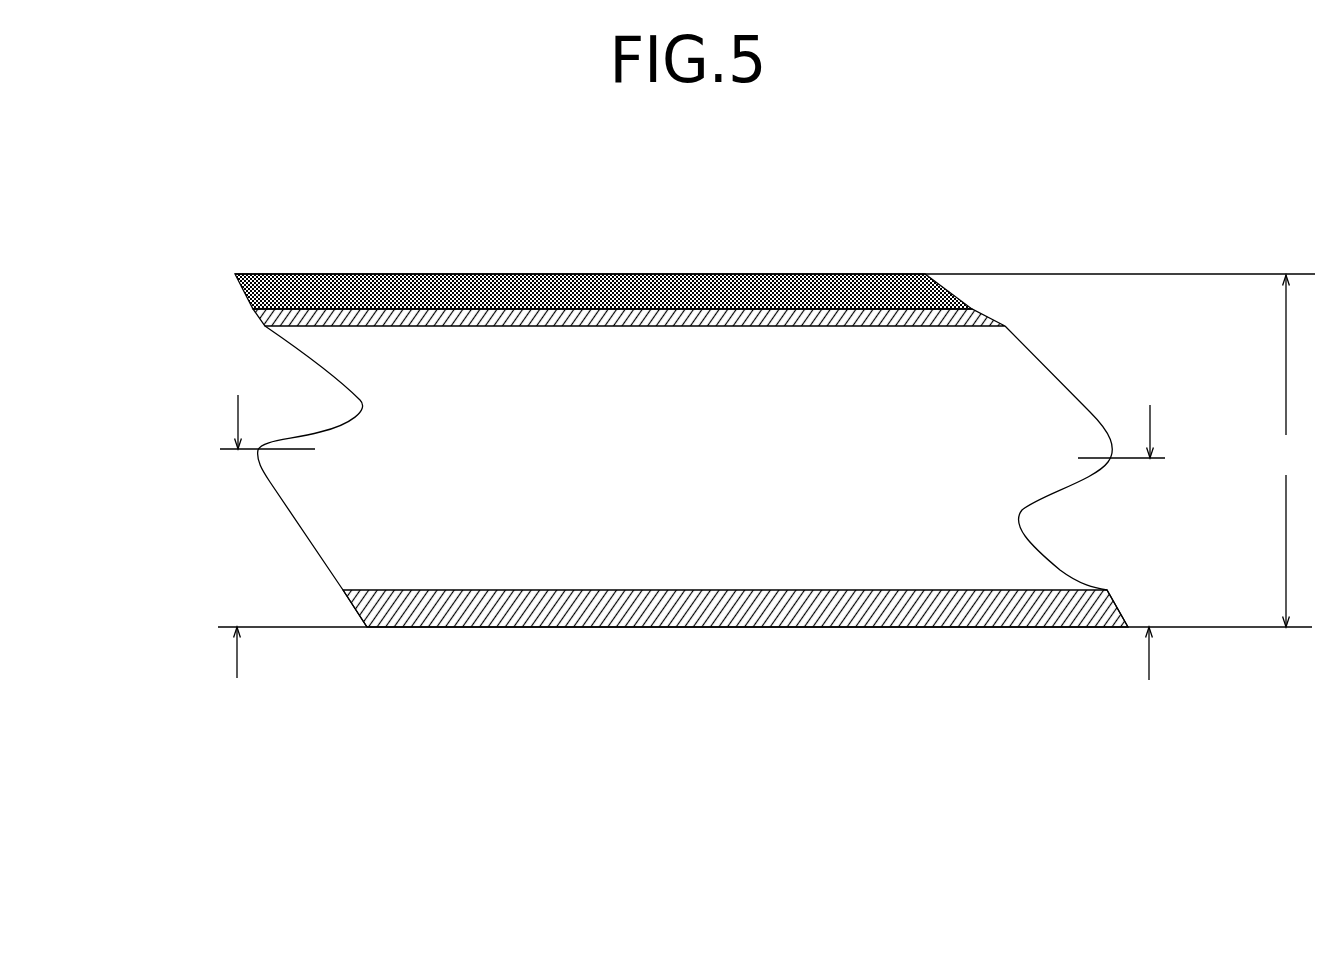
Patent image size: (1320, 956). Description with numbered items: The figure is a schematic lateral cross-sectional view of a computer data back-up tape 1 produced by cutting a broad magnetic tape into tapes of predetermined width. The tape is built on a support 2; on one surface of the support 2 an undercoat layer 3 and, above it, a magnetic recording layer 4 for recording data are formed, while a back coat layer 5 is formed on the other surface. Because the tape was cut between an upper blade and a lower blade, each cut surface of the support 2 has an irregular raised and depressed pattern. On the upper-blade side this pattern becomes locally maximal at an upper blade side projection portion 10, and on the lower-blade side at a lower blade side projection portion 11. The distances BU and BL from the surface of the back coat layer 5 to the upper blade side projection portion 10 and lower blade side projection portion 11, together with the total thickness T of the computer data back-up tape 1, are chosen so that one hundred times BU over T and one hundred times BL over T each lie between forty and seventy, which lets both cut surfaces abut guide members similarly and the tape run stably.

The computer data back-up tape 1 is at (147, 467).
The support 2 is at (972, 365).
The undercoat layer 3 is at (560, 326).
The magnetic recording layer 4 is at (712, 283).
The back coat layer 5 is at (675, 628).
The upper blade side projection portion 10 is at (216, 449).
The lower blade side projection portion 11 is at (1172, 458).